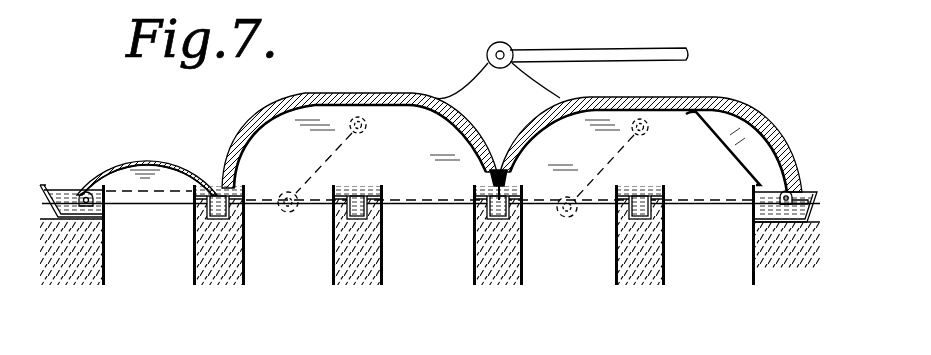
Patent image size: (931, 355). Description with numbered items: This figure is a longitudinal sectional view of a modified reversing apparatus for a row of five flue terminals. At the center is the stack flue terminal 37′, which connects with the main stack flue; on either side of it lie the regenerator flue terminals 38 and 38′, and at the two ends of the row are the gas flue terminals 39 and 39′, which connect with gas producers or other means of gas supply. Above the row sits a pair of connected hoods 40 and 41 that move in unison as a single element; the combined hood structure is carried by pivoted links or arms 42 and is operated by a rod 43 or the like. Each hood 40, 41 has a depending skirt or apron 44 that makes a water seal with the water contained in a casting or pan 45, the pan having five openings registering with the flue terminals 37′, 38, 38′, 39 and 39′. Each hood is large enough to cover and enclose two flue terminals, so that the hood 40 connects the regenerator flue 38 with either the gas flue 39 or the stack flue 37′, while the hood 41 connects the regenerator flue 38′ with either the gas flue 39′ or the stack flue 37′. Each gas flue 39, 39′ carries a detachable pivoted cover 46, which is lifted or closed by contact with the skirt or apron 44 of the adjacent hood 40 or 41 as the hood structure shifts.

The stack flue terminal 37′ is at (428, 235).
The regenerator flue terminal 38 is at (289, 235).
The regenerator flue terminal 38′ is at (569, 235).
The gas flue terminal 39 is at (149, 235).
The gas flue terminal 39′ is at (709, 235).
The hood 40 is at (390, 93).
The hood 41 is at (669, 98).
The pivoted links or arms 42 is at (352, 143).
The rod 43 is at (620, 48).
The depending skirt or apron 44 is at (213, 182).
The casting or pan 45 is at (806, 226).
The detachable pivoted cover 46 is at (136, 164).